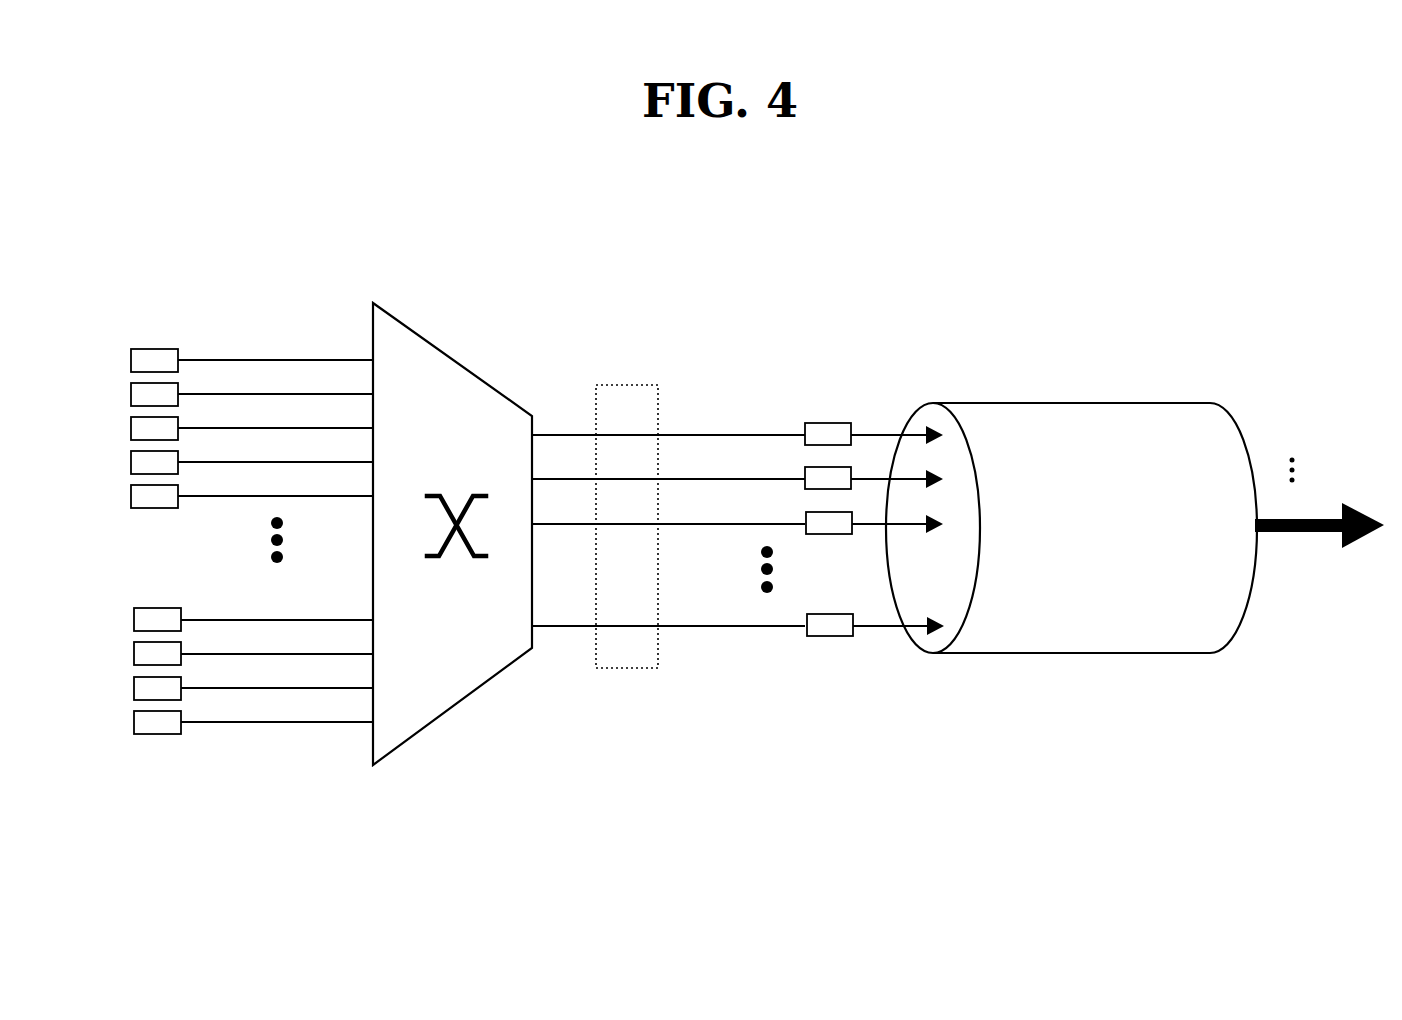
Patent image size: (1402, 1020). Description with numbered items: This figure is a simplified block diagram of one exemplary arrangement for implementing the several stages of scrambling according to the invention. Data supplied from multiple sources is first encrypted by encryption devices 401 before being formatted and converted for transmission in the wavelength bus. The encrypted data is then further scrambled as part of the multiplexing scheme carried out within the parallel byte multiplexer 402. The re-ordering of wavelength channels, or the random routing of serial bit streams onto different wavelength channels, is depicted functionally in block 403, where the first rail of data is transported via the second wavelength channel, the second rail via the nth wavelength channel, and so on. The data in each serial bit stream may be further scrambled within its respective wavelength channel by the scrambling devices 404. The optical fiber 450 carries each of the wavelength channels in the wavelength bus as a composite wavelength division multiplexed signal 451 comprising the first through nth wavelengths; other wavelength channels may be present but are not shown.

The encryption devices 401 is at (162, 343).
The parallel byte multiplexer 402 is at (448, 348).
The block 403 is at (627, 372).
The scrambling devices 404 is at (835, 405).
The optical fiber 450 is at (1039, 375).
The composite wavelength division multiplexed signal 451 is at (1290, 542).